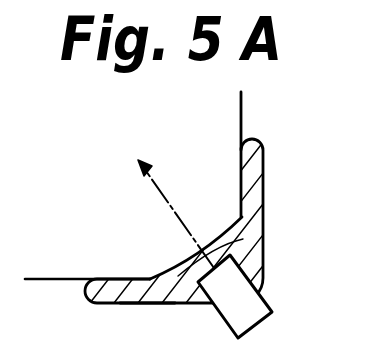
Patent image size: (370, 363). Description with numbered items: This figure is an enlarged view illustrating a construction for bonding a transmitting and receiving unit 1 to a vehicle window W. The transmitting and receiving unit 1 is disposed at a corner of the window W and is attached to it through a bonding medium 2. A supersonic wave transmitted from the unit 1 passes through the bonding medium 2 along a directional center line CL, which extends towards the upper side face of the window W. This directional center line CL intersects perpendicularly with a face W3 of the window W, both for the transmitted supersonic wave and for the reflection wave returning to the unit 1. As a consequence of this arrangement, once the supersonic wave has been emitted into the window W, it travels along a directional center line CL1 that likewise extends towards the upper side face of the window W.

The transmitting and receiving unit 1 is at (272, 307).
The bonding medium 2 is at (264, 150).
The vehicle window W is at (52, 282).
The face of the window W3 is at (148, 305).
The directional center line CL is at (243, 239).
The directional center line CL1 is at (160, 190).